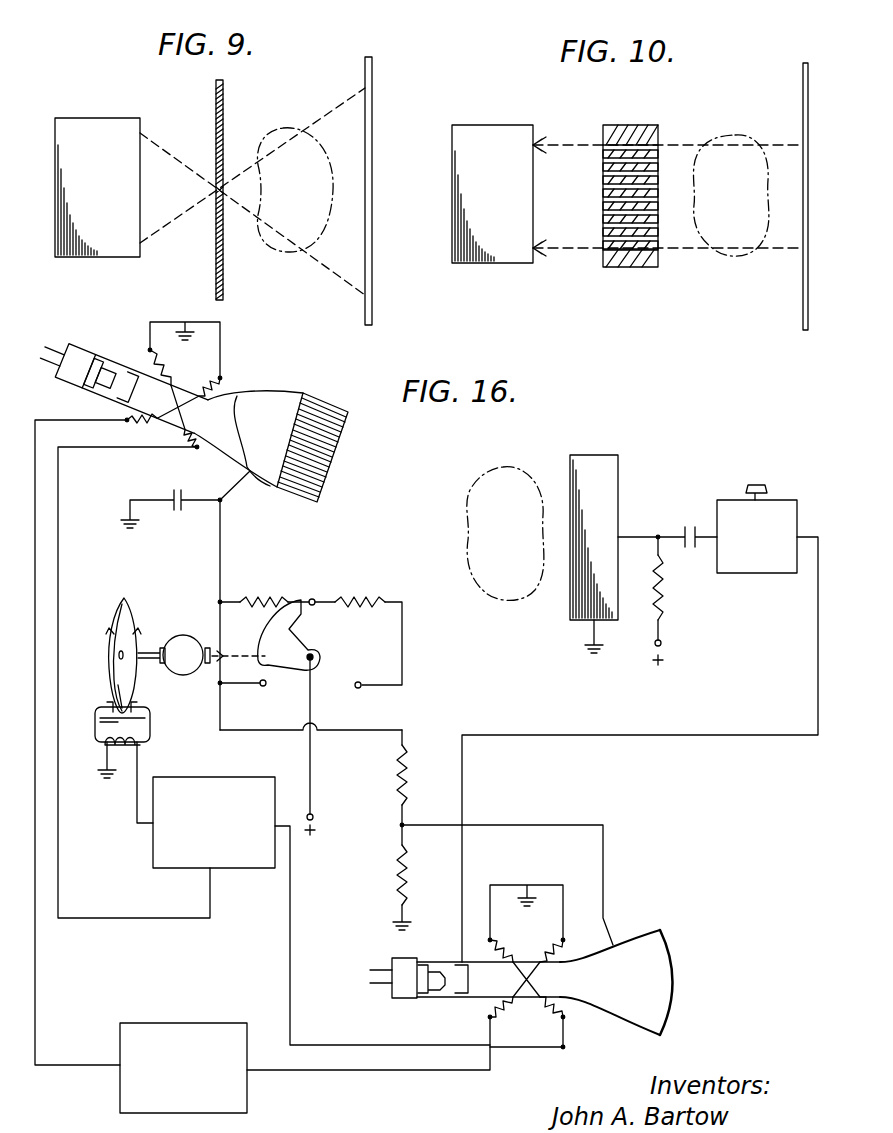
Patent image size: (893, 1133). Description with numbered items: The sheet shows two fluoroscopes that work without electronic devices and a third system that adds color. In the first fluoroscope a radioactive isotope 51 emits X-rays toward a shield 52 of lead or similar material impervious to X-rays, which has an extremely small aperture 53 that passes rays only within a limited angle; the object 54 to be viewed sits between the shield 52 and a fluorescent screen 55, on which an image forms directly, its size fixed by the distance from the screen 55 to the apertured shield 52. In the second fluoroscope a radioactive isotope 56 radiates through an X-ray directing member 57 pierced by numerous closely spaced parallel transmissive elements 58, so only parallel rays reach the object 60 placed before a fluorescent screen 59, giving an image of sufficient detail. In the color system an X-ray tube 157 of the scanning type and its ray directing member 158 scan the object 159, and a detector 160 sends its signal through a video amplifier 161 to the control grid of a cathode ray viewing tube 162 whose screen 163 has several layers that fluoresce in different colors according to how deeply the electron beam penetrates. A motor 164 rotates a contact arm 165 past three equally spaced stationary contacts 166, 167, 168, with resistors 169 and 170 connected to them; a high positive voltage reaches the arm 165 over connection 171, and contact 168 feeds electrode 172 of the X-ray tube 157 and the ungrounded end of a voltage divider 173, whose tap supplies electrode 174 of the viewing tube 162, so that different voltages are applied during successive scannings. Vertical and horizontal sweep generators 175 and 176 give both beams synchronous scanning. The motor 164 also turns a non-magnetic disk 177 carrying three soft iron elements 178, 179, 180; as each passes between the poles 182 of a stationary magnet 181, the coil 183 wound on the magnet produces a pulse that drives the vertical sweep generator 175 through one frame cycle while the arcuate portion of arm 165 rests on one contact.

In FIG. 9, the radioactive isotope 51 is at (103, 120).
In FIG. 9, the shield 52 is at (216, 110).
In FIG. 9, the aperture 53 is at (217, 197).
In FIG. 9, the object 54 is at (284, 128).
In FIG. 9, the fluorescent screen 55 is at (372, 105).
In FIG. 10, the radioactive isotope 56 is at (497, 128).
In FIG. 10, the X-ray directing member 57 is at (605, 176).
In FIG. 10, the X-ray transmissive elements 58 is at (604, 204).
In FIG. 10, the fluorescent screen 59 is at (803, 100).
In FIG. 10, the object 60 is at (718, 260).
In FIG. 16, the X-ray tube 157 is at (98, 356).
In FIG. 16, the ray directing member 158 is at (325, 396).
In FIG. 16, the object 159 is at (500, 468).
In FIG. 16, the detector 160 is at (612, 468).
In FIG. 16, the video amplifier 161 is at (777, 504).
In FIG. 16, the cathode ray viewing tube 162 is at (470, 998).
In FIG. 16, the screen 163 is at (675, 967).
In FIG. 16, the motor 164 is at (183, 640).
In FIG. 16, the contact arm 165 is at (240, 650).
In FIG. 16, the stationary contact 166 is at (360, 688).
In FIG. 16, the stationary contact 167 is at (313, 598).
In FIG. 16, the stationary contact 168 is at (264, 686).
In FIG. 16, the resistor 169 is at (372, 598).
In FIG. 16, the resistor 170 is at (255, 598).
In FIG. 16, the connection 171 is at (312, 766).
In FIG. 16, the electrode 172 is at (250, 468).
In FIG. 16, the voltage divider 173 is at (396, 860).
In FIG. 16, the electrode 174 is at (590, 962).
In FIG. 16, the vertical sweep generator 175 is at (205, 780).
In FIG. 16, the horizontal sweep generator 176 is at (170, 1022).
In FIG. 16, the disk 177 is at (118, 600).
In FIG. 16, the soft iron element 178 is at (140, 630).
In FIG. 16, the soft iron element 179 is at (120, 706).
In FIG. 16, the soft iron element 180 is at (109, 630).
In FIG. 16, the stationary magnet 181 is at (150, 732).
In FIG. 16, the poles 182 is at (108, 708).
In FIG. 16, the coil 183 is at (103, 722).